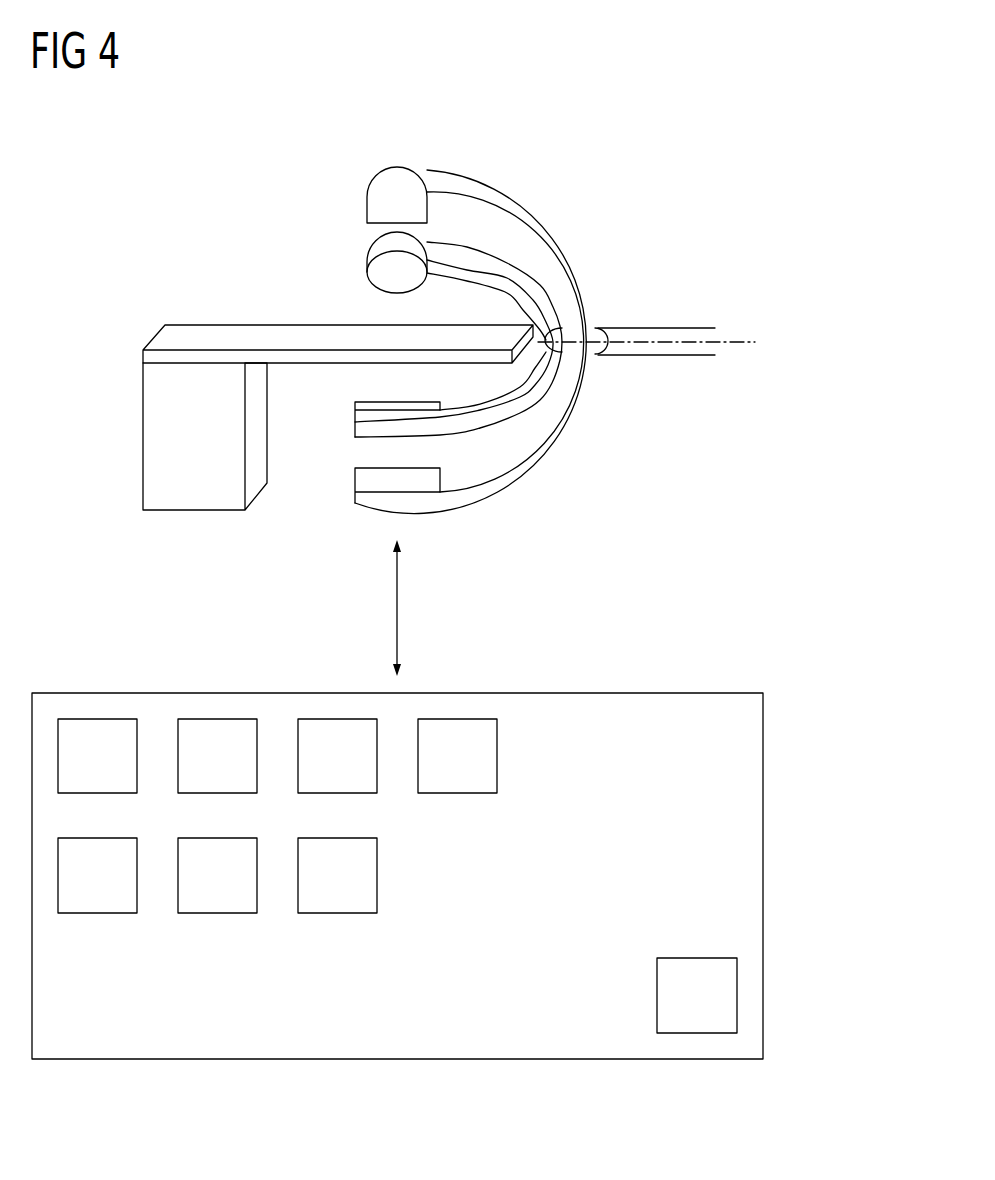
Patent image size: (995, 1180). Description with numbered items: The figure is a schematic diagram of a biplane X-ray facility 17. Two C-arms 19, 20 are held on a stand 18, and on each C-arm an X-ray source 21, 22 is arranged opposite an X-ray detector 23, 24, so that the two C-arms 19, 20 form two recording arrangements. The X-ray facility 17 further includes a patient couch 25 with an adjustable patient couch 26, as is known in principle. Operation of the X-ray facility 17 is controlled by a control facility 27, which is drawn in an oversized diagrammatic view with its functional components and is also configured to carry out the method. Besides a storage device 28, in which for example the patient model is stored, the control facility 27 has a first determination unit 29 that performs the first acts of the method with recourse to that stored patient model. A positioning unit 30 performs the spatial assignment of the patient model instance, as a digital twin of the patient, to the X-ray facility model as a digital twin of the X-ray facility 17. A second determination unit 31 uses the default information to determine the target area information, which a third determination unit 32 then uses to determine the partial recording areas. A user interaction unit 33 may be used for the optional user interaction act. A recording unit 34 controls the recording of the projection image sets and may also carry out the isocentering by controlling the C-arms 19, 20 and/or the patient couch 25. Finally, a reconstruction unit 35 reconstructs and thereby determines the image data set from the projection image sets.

The X-ray facility 17 is at (630, 124).
The stand 18 is at (603, 327).
The C-arm 19 is at (522, 215).
The C-arm 20 is at (472, 257).
The X-ray source 21 is at (385, 190).
The X-ray source 22 is at (385, 247).
The X-ray detector 23 is at (382, 407).
The X-ray detector 24 is at (368, 485).
The patient couch 25 is at (158, 447).
The adjustable patient couch 26 is at (228, 335).
The control facility 27 is at (617, 693).
The storage device 28 is at (697, 1033).
The first determination unit 29 is at (93, 719).
The positioning unit 30 is at (213, 719).
The second determination unit 31 is at (93, 913).
The third determination unit 32 is at (213, 913).
The user interaction unit 33 is at (333, 719).
The recording unit 34 is at (333, 913).
The reconstruction unit 35 is at (453, 719).